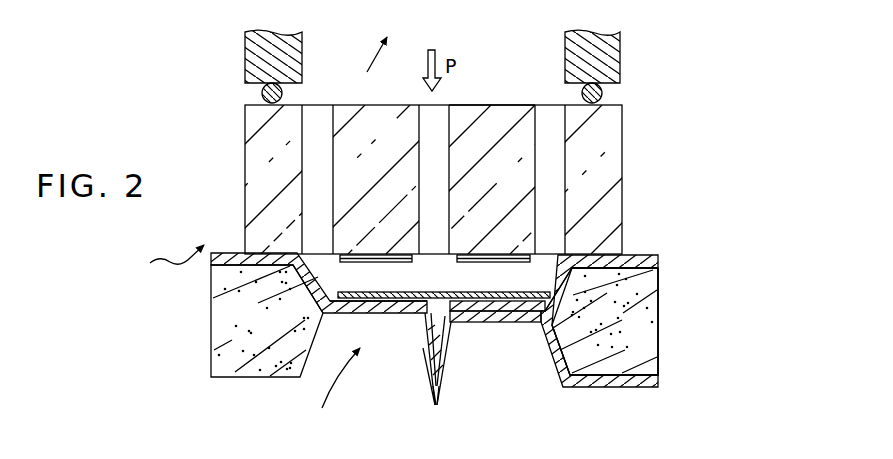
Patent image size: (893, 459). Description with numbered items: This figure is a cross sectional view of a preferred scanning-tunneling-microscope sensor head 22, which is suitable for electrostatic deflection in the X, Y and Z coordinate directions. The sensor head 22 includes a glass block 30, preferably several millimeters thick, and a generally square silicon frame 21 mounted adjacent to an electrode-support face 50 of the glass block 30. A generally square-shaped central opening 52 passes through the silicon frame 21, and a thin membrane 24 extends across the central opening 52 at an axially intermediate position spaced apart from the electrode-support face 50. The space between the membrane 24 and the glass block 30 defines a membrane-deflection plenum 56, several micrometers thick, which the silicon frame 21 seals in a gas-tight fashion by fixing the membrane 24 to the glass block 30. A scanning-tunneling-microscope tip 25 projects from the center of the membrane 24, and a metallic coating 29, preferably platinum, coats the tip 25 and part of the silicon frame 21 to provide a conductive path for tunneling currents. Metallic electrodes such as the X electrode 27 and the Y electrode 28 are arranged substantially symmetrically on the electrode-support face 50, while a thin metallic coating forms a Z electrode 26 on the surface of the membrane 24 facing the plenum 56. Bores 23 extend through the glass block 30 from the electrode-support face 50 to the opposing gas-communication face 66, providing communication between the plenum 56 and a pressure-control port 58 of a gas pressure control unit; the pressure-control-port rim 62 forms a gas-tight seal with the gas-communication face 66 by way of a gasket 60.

The silicon frame 21 is at (262, 333).
The scanning-tunneling-microscope sensor head 22 is at (164, 262).
The bores 23 is at (434, 179).
The membrane 24 is at (632, 258).
The scanning-tunneling-microscope tip 25 is at (430, 340).
The Z electrode 26 is at (417, 292).
The metallic electrode X1 27 is at (373, 263).
The metallic electrode Y1 28 is at (492, 266).
The metallic coating 29 is at (439, 394).
The glass block 30 is at (387, 159).
The electrode-support face 50 is at (453, 266).
The central opening 52 is at (327, 388).
The membrane-deflection plenum 56 is at (400, 288).
The pressure-control port 58 is at (365, 63).
The gasket 60 is at (601, 97).
The pressure-control-port rim 62 is at (613, 50).
The gas-communication face 66 is at (513, 104).